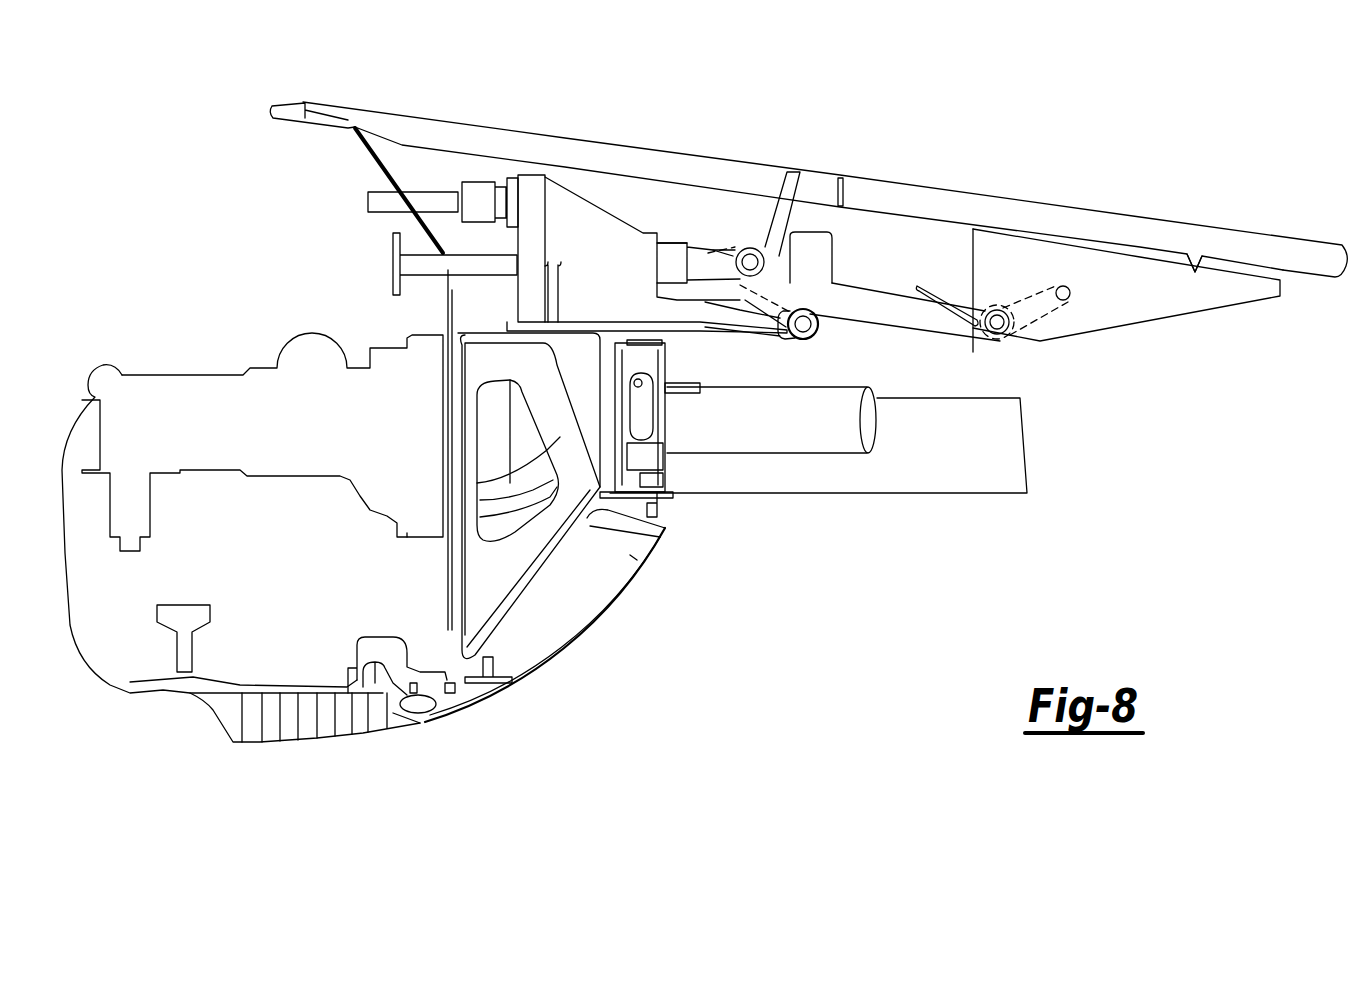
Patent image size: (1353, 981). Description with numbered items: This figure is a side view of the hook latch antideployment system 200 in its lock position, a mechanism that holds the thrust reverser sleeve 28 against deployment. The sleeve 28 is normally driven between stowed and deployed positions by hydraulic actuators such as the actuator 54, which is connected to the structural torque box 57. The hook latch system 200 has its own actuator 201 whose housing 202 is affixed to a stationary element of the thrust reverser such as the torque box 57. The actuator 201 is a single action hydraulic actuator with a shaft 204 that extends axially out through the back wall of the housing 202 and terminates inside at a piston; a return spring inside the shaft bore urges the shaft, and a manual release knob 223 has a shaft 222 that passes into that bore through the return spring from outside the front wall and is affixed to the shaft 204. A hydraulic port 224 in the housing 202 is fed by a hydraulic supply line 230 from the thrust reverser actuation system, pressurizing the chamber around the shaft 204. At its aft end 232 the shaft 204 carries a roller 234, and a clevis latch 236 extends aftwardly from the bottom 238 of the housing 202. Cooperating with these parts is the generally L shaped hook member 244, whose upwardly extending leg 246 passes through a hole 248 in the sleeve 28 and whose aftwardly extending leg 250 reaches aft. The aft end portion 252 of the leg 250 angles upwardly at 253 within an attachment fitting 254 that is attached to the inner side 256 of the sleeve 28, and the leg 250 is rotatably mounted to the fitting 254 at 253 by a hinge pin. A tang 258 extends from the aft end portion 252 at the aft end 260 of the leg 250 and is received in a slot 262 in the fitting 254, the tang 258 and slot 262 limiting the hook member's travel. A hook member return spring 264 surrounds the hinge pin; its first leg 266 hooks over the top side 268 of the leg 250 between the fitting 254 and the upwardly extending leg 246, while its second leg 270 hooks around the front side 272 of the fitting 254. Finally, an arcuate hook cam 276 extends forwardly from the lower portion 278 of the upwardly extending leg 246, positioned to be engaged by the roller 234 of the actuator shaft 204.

The thrust reverser sleeve 28 is at (440, 120).
The hydraulic actuator 54 is at (157, 376).
The torque box 57 is at (447, 412).
The hook latch antideployment system 200 is at (681, 228).
The actuator 201 is at (598, 213).
The housing 202 is at (562, 224).
The shaft 204 is at (708, 240).
The shaft 222 is at (410, 280).
The manual release knob 223 is at (393, 247).
The hydraulic port 224 is at (506, 175).
The hydraulic supply line 230 is at (418, 195).
The aft end 232 is at (758, 247).
The roller 234 is at (770, 250).
The clevis latch 236 is at (737, 332).
The bottom 238 is at (557, 322).
The hook member 244 is at (822, 170).
The upwardly extending leg 246 is at (832, 286).
The hole 248 is at (840, 176).
The aftwardly extending leg 250 is at (915, 283).
The aft end portion 252 is at (1030, 330).
The upward angle location 253 is at (985, 340).
The attachment fitting 254 is at (1260, 300).
The inner side 256 is at (1197, 268).
The tang 258 is at (1073, 293).
The aft end 260 is at (1068, 292).
The slot 262 is at (1066, 305).
The hook member return spring 264 is at (1028, 345).
The first leg 266 is at (967, 330).
The top side 268 is at (874, 290).
The second leg 270 is at (973, 290).
The front side 272 is at (972, 247).
The hook cam 276 is at (728, 242).
The lower portion 278 is at (772, 293).